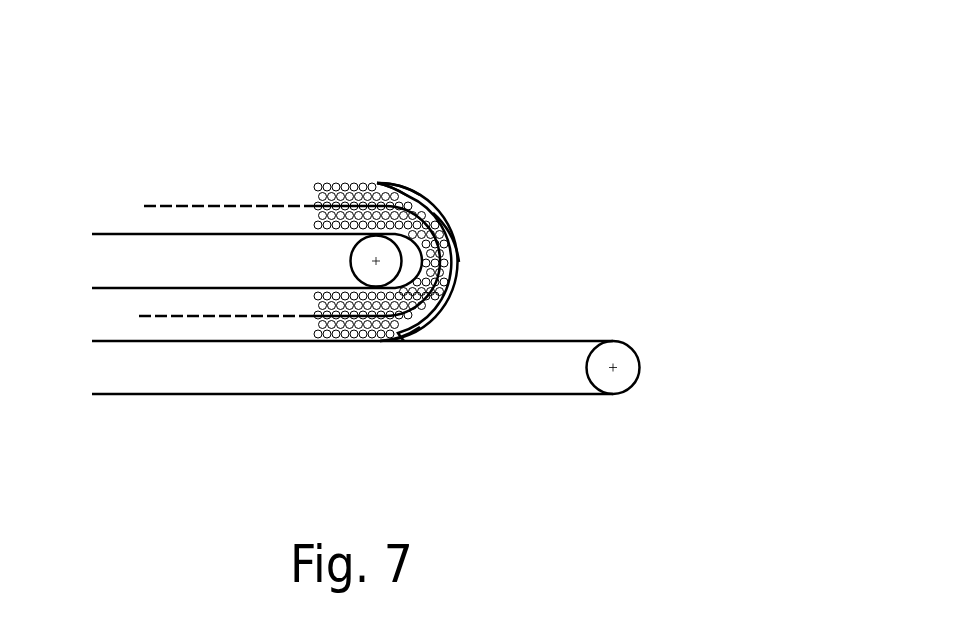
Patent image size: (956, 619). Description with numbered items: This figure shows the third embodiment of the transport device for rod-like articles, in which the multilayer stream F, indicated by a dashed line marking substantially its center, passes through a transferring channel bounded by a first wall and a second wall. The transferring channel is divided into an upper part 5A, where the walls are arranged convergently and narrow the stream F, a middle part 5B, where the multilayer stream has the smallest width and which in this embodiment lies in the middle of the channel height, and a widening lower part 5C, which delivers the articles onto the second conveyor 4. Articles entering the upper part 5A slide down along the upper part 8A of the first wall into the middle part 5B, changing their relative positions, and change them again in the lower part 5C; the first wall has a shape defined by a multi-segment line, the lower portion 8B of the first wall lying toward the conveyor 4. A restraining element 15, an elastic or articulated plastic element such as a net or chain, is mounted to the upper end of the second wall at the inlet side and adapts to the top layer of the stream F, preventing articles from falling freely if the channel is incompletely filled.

The multilayer stream F is at (183, 205).
The upper part of the transferring channel 5A is at (376, 183).
The middle part of the transferring channel 5B is at (457, 253).
The lower part of the transferring channel 5C is at (403, 340).
The restraining element 15 is at (400, 184).
The upper part of the first wall 8A is at (419, 195).
The lower particle layer 8B is at (447, 303).
The second conveyor 4 is at (588, 340).